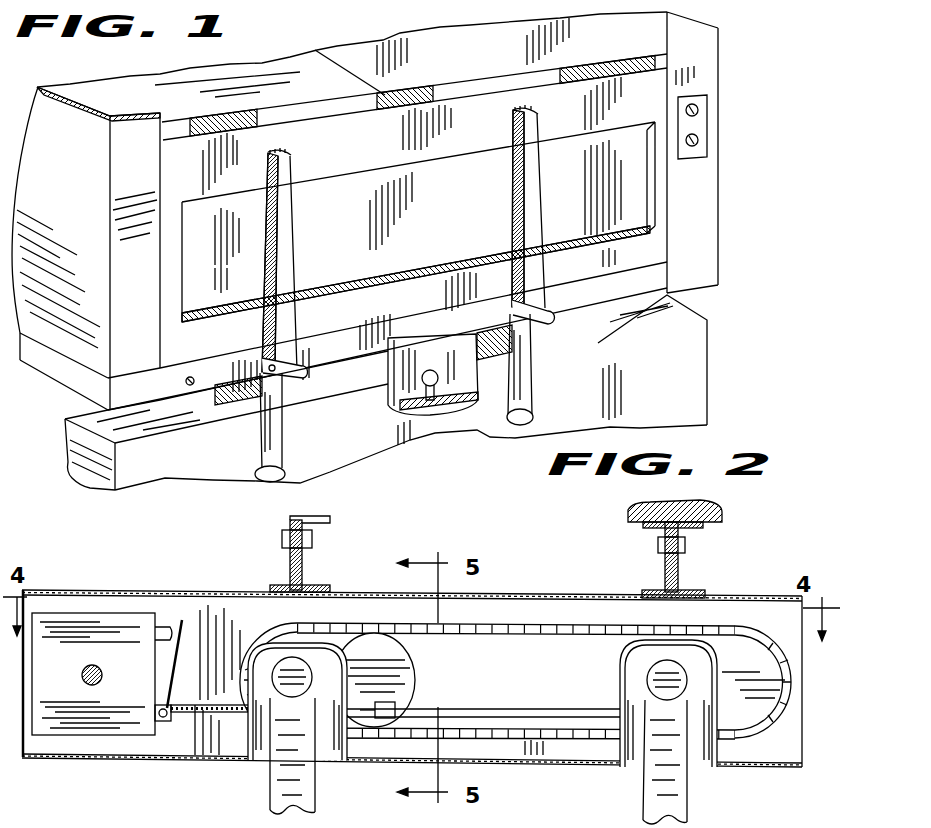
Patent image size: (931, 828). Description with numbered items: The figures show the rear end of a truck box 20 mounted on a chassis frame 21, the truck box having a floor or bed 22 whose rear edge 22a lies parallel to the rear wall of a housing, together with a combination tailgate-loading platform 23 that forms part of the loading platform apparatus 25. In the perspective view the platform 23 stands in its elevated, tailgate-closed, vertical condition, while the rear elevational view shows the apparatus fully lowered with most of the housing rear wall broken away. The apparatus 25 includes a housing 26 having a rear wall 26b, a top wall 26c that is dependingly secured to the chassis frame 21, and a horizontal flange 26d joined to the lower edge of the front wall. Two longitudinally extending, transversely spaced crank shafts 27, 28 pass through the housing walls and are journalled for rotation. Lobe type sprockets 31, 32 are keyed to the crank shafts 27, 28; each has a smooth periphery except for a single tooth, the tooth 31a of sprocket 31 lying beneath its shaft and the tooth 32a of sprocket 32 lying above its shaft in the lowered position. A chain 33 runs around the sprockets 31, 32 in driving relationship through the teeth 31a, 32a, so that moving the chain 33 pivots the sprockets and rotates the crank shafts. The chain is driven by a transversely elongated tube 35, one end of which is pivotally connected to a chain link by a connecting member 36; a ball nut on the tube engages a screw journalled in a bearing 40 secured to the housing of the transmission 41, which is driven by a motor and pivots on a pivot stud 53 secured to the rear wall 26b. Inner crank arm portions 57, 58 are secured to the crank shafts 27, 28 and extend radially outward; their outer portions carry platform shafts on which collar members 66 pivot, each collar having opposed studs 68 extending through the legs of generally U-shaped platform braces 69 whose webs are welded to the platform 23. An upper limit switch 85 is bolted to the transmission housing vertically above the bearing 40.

In FIG. 1, the truck box 20 is at (712, 66).
In FIG. 1, the chassis frame 21 is at (256, 413).
In FIG. 2, the chassis frame 21 is at (304, 560).
In FIG. 1, the floor or bed 22 is at (228, 92).
In FIG. 2, the floor or bed 22 is at (702, 506).
In FIG. 1, the rear edge of the truck floor 22a is at (397, 332).
In FIG. 1, the combination tailgate-loading platform 23 is at (312, 137).
In FIG. 1, the loading platform apparatus 25 is at (472, 438).
In FIG. 1, the housing 26 is at (213, 481).
In FIG. 1, the rear wall 26b is at (182, 463).
In FIG. 2, the rear wall 26b is at (701, 763).
In FIG. 1, the top wall 26c is at (547, 348).
In FIG. 2, the top wall 26c is at (89, 590).
In FIG. 2, the horizontal flange 26d is at (766, 770).
In FIG. 1, the crank shaft 27 is at (286, 479).
In FIG. 2, the crank shaft 27 is at (303, 673).
In FIG. 1, the crank shaft 28 is at (531, 418).
In FIG. 2, the crank shaft 28 is at (645, 673).
In FIG. 2, the lobe type sprocket 31 is at (398, 664).
In FIG. 2, the sprocket tooth 31a is at (262, 748).
In FIG. 2, the lobe type sprocket 32 is at (739, 648).
In FIG. 2, the sprocket tooth 32a is at (670, 633).
In FIG. 2, the chain 33 is at (514, 629).
In FIG. 2, the transversely elongated tube 35 is at (512, 714).
In FIG. 2, the connecting member 36 is at (524, 731).
In FIG. 2, the bearing 40 is at (157, 694).
In FIG. 1, the transmission 41 is at (86, 475).
In FIG. 2, the pivot stud 53 is at (81, 675).
In FIG. 1, the inner crank arm portion 57 is at (283, 443).
In FIG. 2, the inner crank arm portion 57 is at (317, 793).
In FIG. 1, the inner crank arm portion 58 is at (525, 378).
In FIG. 2, the inner crank arm portion 58 is at (643, 786).
In FIG. 1, the collar member 66 is at (302, 365).
In FIG. 1, the stud 68 is at (276, 373).
In FIG. 1, the U-shaped platform brace 69 is at (289, 232).
In FIG. 2, the upper limit switch 85 is at (163, 617).